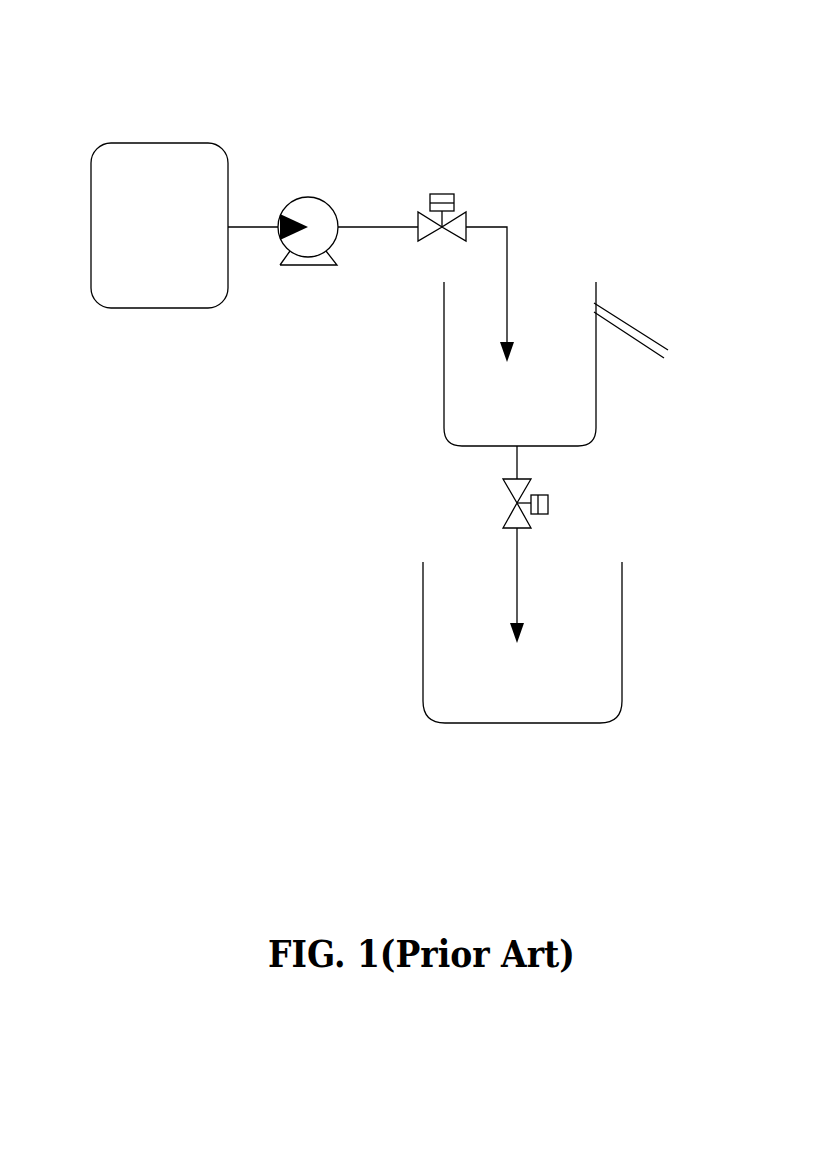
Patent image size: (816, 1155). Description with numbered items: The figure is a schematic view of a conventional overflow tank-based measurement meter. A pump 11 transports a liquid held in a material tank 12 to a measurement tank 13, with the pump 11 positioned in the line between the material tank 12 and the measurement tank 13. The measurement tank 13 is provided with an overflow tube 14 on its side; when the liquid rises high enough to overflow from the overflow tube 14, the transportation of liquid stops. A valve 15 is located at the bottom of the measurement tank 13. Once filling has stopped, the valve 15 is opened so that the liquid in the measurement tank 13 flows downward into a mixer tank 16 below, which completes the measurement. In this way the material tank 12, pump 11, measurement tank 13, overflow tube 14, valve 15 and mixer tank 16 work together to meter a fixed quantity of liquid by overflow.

The pump 11 is at (322, 213).
The material tank 12 is at (158, 143).
The measurement tank 13 is at (444, 353).
The overflow tube 14 is at (632, 322).
The valve 15 is at (508, 492).
The mixer tank 16 is at (423, 631).